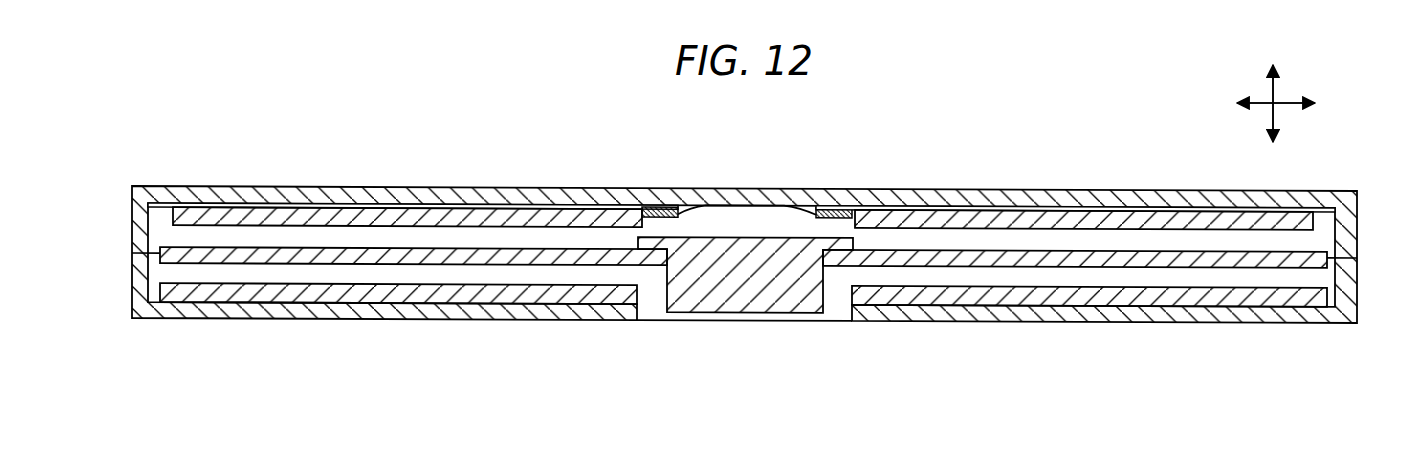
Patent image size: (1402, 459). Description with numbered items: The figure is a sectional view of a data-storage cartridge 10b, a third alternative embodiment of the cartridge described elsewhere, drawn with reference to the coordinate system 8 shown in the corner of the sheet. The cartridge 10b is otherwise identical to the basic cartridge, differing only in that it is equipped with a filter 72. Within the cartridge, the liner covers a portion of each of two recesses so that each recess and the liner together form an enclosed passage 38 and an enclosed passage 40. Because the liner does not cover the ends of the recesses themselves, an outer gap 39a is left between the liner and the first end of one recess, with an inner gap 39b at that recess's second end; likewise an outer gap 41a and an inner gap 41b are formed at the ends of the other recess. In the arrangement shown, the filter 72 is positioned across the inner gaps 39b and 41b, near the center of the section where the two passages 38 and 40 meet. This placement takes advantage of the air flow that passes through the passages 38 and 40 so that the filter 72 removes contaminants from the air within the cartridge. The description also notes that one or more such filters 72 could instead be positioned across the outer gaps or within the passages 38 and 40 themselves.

The data-storage cartridge 10b is at (161, 138).
The enclosed passage 38 is at (317, 203).
The outer gap 39a is at (164, 203).
The inner gap 39b is at (646, 205).
The enclosed passage 40 is at (1007, 201).
The outer gap 41a is at (1327, 205).
The inner gap 41b is at (851, 205).
The filter 72 is at (784, 203).
The coordinate system 8 is at (1275, 102).